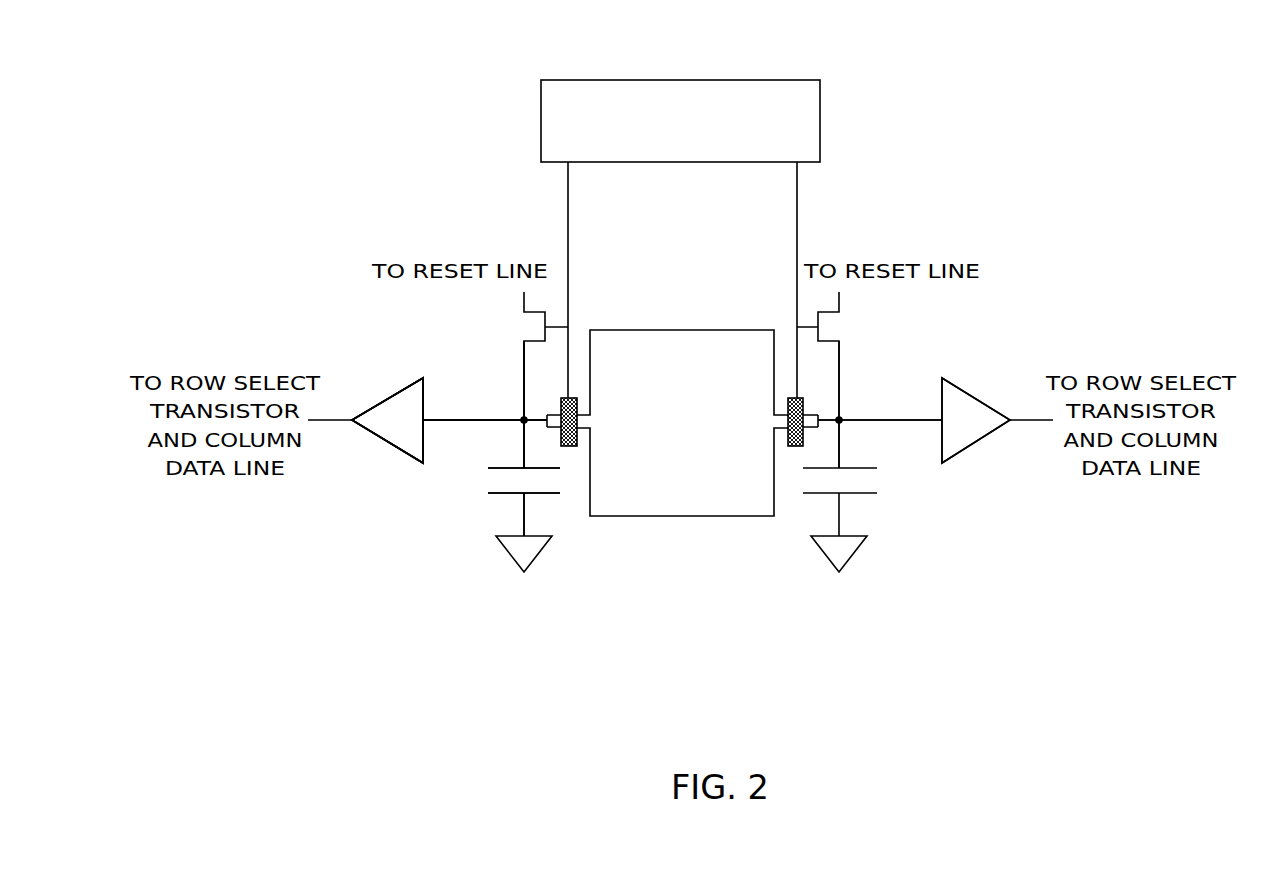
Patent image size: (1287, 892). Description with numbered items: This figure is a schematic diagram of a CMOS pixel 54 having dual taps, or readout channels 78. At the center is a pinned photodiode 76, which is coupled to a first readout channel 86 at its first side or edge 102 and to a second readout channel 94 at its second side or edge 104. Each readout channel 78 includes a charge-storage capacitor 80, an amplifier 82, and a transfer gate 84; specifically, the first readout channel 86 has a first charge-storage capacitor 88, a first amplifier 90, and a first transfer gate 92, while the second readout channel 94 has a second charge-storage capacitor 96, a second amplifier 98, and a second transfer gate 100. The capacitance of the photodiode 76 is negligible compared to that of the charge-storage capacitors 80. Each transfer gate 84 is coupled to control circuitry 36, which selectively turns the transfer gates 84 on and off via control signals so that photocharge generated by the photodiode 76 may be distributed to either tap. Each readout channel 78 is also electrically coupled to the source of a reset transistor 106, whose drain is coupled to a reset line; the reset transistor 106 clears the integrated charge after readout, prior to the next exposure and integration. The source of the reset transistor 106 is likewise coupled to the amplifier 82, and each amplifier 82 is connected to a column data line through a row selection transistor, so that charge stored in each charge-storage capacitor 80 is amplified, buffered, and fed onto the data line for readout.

The control circuitry 36 is at (682, 78).
The pixel 54 is at (397, 184).
The photodiode 76 is at (678, 518).
The readout channel 78 is at (463, 382).
The charge-storage capacitor 80 is at (503, 495).
The amplifier 82 is at (390, 445).
The transfer gate 84 is at (560, 433).
The first readout channel 86 is at (387, 393).
The first charge-storage capacitor 88 is at (508, 508).
The first amplifier 90 is at (390, 442).
The first transfer gate 92 is at (485, 404).
The second readout channel 94 is at (900, 381).
The second charge-storage capacitor 96 is at (863, 496).
The second amplifier 98 is at (972, 445).
The second transfer gate 100 is at (808, 434).
The first side 102 is at (588, 496).
The second side 104 is at (776, 496).
The reset transistor 106 is at (540, 314).